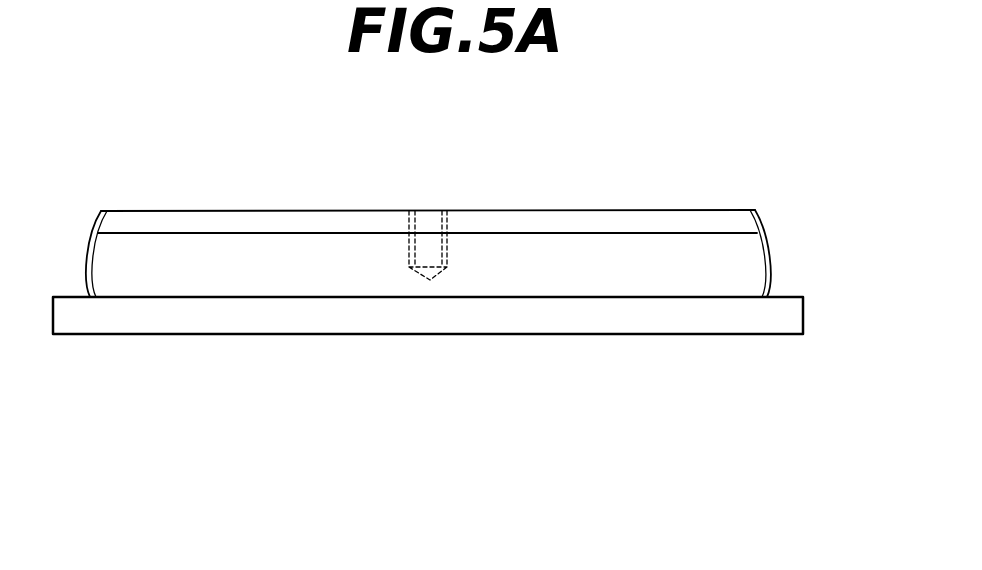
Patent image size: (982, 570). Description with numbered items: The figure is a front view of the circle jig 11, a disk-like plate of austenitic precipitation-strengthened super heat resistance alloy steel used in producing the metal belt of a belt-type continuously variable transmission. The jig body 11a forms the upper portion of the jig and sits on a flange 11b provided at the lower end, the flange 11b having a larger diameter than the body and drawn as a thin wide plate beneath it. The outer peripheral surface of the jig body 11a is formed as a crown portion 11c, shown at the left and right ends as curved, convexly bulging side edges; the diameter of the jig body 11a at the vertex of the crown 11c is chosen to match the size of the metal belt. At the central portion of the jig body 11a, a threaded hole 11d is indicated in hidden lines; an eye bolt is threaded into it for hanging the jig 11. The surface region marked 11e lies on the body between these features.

The circle jig 11 is at (552, 185).
The jig body 11a is at (227, 210).
The flange 11b is at (255, 322).
The crown portion 11c is at (743, 260).
The threaded hole 11d is at (433, 210).
The top surface 11e is at (653, 217).